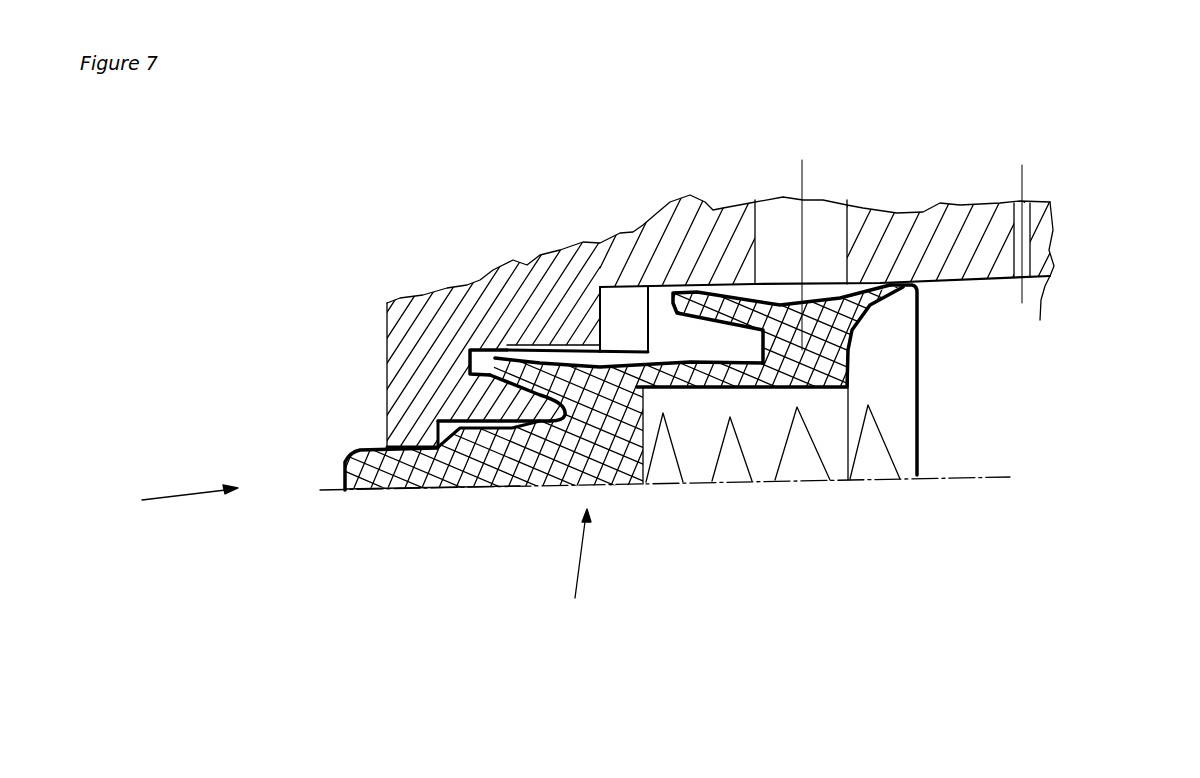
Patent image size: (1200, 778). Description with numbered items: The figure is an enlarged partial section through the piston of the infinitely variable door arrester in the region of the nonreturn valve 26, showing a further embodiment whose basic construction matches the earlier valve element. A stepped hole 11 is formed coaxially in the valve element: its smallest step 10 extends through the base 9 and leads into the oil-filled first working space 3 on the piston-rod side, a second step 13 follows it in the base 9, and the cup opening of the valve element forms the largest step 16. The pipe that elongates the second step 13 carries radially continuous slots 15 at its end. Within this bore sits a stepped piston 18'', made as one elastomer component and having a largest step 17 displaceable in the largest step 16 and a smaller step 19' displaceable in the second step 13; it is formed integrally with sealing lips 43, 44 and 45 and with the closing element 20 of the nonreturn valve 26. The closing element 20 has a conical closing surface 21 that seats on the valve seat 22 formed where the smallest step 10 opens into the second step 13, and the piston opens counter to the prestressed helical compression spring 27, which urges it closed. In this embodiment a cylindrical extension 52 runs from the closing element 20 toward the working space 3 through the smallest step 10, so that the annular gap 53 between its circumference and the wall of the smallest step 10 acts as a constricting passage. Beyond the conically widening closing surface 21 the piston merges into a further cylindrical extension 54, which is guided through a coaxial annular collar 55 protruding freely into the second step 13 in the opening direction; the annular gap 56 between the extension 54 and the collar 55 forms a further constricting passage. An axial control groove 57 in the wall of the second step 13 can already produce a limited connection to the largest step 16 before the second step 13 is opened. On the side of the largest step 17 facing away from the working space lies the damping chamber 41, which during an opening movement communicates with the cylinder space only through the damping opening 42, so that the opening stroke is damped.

The first working space 3 is at (167, 423).
The base 9 is at (413, 372).
The smallest step 10 is at (387, 445).
The stepped hole 11 is at (660, 278).
The second step 13 is at (387, 303).
The slots 15 is at (620, 310).
The largest step 16 is at (660, 305).
The largest step of the stepped piston 17 is at (825, 300).
The stepped piston 18'' is at (577, 570).
The smaller step 19' is at (577, 206).
The closing element 20 is at (392, 414).
The closing surface 21 is at (395, 405).
The valve seat 22 is at (433, 452).
The nonreturn valve 26 is at (173, 498).
The helical compression spring 27 is at (887, 443).
The damping chamber 41 is at (1000, 358).
The damping opening 42 is at (1037, 201).
The sealing lip 43 is at (692, 292).
The sealing lip 44 is at (905, 282).
The sealing lip 45 is at (507, 350).
The cylindrical extension 52 is at (390, 458).
The annular gap 53 is at (392, 442).
The further cylindrical extension 54 is at (496, 455).
The annular collar 55 is at (517, 405).
The annular gap 56 is at (475, 425).
The axial control groove 57 is at (548, 346).